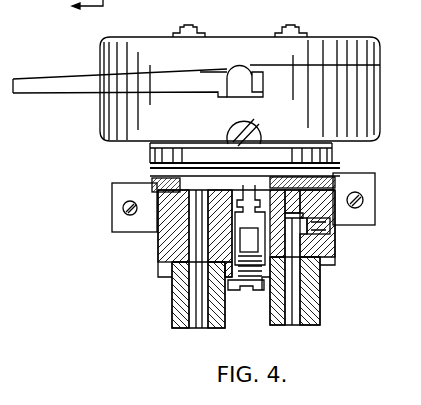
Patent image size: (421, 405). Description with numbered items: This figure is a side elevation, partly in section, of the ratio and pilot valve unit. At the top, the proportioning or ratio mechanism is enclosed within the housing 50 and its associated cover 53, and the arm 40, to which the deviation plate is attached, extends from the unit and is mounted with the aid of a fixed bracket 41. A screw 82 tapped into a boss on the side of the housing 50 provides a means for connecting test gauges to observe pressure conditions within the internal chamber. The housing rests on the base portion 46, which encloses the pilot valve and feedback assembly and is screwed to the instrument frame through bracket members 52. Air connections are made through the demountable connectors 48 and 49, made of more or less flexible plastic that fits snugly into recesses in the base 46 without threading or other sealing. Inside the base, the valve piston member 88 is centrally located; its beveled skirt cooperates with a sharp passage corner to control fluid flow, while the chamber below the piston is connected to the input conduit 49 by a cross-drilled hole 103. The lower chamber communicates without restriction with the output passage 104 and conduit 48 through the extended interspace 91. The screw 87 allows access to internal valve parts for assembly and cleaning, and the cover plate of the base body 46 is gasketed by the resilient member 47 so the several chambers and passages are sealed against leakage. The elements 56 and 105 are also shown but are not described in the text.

The arm 40 is at (61, 88).
The fixed bracket 41 is at (248, 78).
The base portion 46 is at (330, 266).
The resilient gasket member 47 is at (157, 183).
The demountable connector 48 is at (176, 303).
The demountable connector 49 is at (315, 310).
The housing 50 is at (355, 136).
The bracket member 52 is at (372, 203).
The cover 53 is at (323, 40).
The mounting clip 56 is at (182, 31).
The screw 82 is at (255, 137).
The screw 87 is at (257, 291).
The valve piston member 88 is at (246, 189).
The extended interspace 91 is at (155, 194).
The cross-drilled hole 103 is at (320, 227).
The output passage 104 is at (197, 226).
The right plunger rod 105 is at (297, 250).